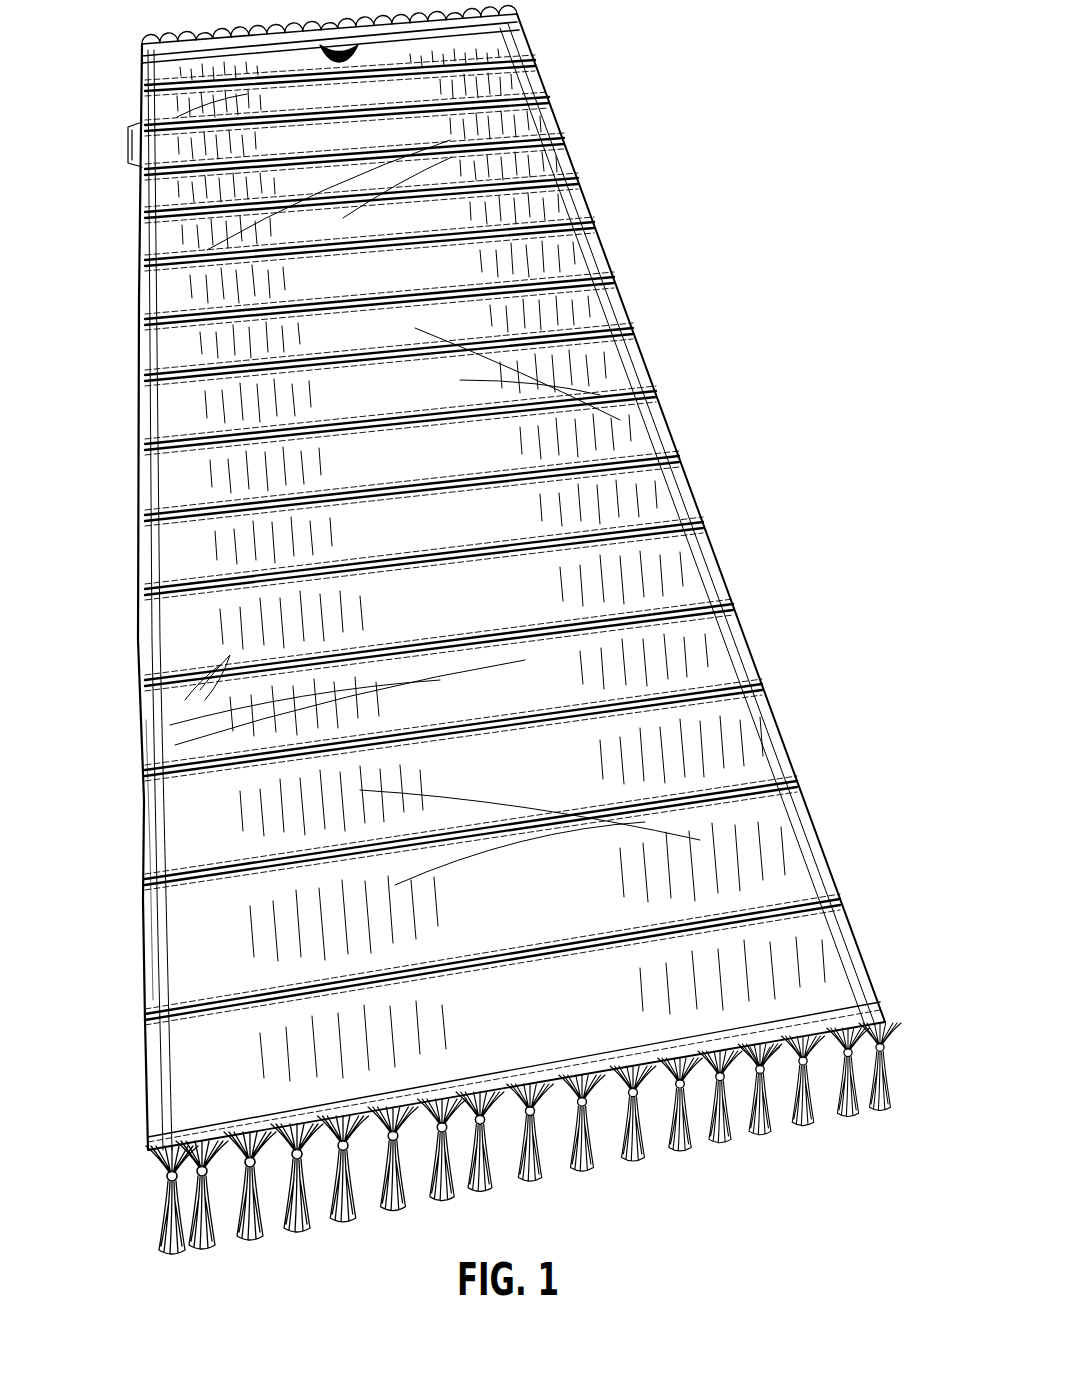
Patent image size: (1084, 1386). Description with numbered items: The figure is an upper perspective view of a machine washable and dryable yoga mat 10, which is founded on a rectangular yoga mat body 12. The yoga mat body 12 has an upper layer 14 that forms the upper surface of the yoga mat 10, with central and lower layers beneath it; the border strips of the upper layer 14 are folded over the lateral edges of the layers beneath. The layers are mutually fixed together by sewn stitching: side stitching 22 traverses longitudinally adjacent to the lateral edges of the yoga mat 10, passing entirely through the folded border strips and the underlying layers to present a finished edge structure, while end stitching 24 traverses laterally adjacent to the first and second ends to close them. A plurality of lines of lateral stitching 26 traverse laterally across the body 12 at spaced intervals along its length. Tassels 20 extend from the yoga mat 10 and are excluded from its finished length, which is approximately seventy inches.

The machine washable and dryable yoga mat 10 is at (757, 215).
The yoga mat body 12 is at (140, 245).
The upper layer 14 is at (617, 427).
The tassels 20 is at (582, 1176).
The side stitching 22 is at (163, 827).
The end stitching 24 is at (770, 1055).
The lateral stitching 26 is at (224, 672).